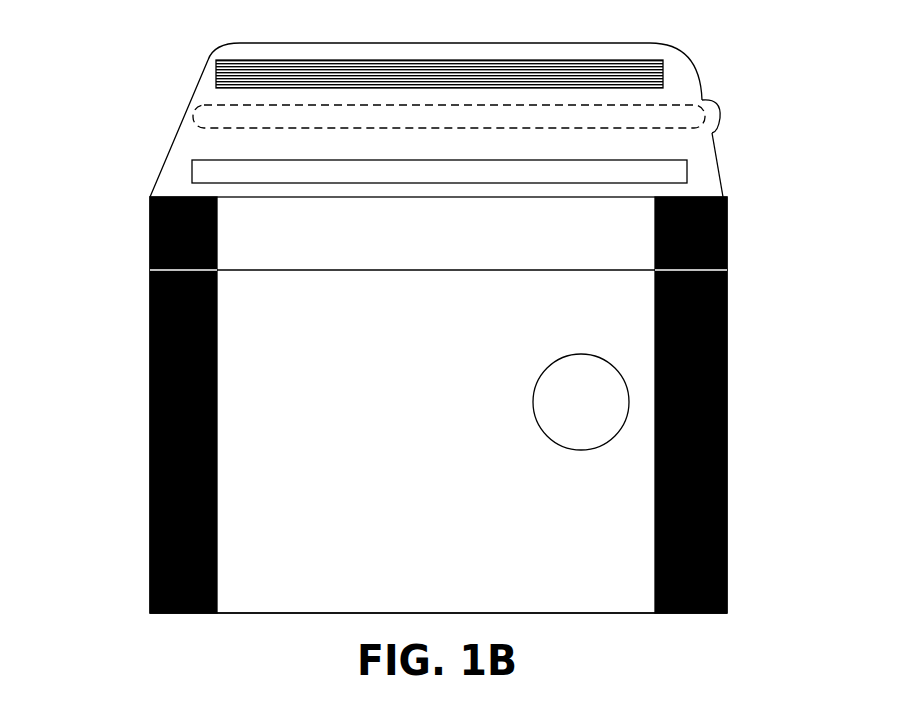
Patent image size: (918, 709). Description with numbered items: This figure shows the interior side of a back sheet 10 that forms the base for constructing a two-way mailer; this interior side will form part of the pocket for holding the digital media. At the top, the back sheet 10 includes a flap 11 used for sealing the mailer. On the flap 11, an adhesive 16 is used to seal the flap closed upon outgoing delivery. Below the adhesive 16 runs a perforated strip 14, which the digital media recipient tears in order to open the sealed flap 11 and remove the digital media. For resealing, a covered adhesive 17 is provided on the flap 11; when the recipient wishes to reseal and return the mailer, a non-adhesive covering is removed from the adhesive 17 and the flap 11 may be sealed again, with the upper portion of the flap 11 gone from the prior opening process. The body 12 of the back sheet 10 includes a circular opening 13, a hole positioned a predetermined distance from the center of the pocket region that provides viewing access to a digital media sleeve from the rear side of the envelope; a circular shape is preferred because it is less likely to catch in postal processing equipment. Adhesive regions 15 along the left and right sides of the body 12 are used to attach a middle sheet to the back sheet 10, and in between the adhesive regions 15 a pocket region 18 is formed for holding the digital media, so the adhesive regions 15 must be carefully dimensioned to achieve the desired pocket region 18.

The back sheet 10 is at (720, 51).
The flap 11 is at (182, 142).
The body 12 is at (593, 595).
The circular opening 13 is at (536, 378).
The perforated strip 14 is at (673, 115).
The adhesive regions 15 is at (160, 342).
The adhesive 16 is at (237, 75).
The covered adhesive 17 is at (203, 175).
The pocket region 18 is at (221, 302).